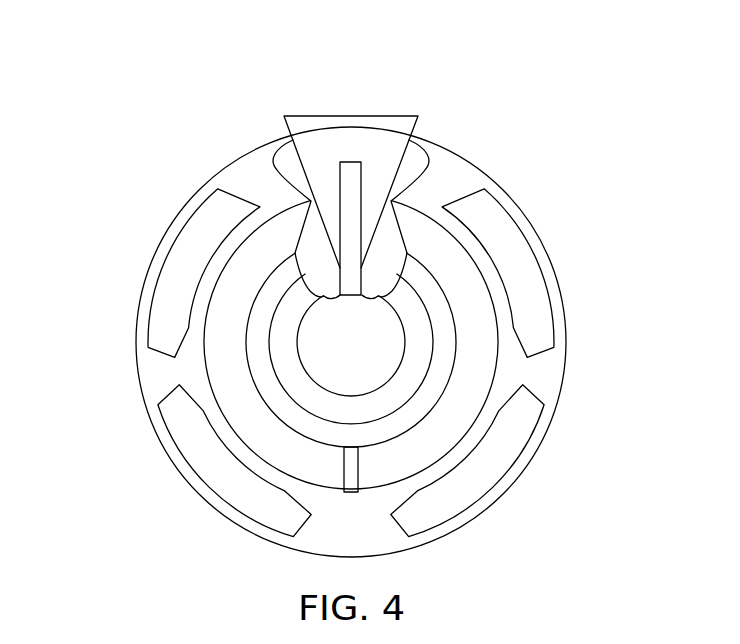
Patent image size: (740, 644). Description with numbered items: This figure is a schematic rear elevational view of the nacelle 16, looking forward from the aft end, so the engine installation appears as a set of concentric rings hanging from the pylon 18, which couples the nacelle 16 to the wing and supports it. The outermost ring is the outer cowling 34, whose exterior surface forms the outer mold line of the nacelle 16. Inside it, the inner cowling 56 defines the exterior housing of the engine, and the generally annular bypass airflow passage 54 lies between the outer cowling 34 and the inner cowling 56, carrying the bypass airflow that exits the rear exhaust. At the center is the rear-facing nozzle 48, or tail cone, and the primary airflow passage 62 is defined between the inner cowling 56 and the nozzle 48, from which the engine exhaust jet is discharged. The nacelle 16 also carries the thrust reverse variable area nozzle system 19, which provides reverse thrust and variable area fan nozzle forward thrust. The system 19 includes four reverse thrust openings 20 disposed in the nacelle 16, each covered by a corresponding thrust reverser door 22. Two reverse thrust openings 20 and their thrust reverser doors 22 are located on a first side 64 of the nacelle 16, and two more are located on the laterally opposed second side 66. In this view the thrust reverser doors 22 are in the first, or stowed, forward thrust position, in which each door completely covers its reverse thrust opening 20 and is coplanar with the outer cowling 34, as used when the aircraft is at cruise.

The nacelle 16 is at (208, 130).
The pylon 18 is at (400, 92).
The thrust reverse variable area nozzle system 19 is at (583, 327).
The reverse thrust opening 20 is at (170, 243).
The thrust reverser door 22 is at (172, 295).
The outer cowling 34 is at (462, 153).
The nozzle 48 is at (408, 347).
The bypass airflow passage 54 is at (440, 258).
The inner cowling 56 is at (243, 345).
The primary airflow passage 62 is at (292, 355).
The first side 64 is at (124, 385).
The second side 66 is at (578, 385).